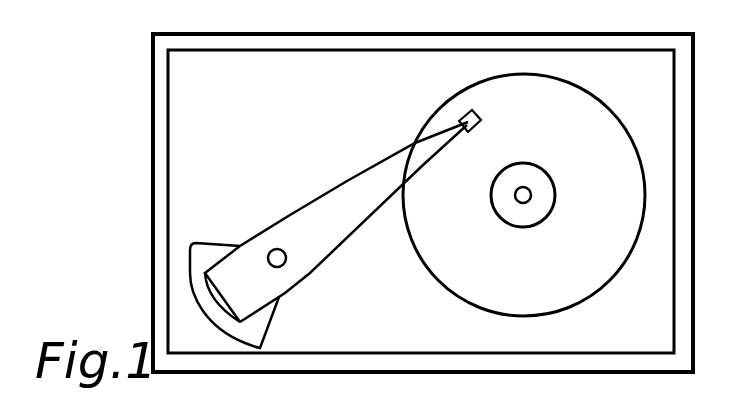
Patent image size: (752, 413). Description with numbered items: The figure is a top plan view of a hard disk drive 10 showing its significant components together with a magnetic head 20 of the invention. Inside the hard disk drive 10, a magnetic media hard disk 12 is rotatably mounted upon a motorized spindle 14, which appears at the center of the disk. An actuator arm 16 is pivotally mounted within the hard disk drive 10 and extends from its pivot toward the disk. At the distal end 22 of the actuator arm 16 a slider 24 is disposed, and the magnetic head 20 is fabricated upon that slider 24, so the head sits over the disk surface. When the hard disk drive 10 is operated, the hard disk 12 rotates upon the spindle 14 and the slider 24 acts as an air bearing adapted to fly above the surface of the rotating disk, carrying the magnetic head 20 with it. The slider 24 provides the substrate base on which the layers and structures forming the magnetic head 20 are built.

The hard disk drive 10 is at (153, 188).
The magnetic media hard disk 12 is at (431, 272).
The motorized spindle 14 is at (553, 187).
The actuator arm 16 is at (348, 181).
The magnetic head 20 is at (491, 109).
The distal end 22 is at (451, 130).
The slider 24 is at (457, 117).